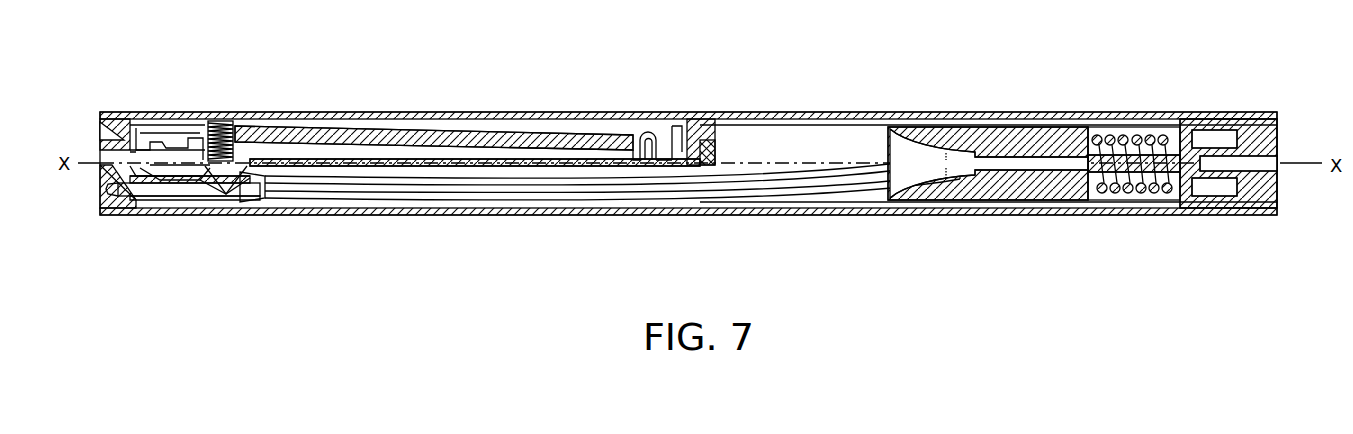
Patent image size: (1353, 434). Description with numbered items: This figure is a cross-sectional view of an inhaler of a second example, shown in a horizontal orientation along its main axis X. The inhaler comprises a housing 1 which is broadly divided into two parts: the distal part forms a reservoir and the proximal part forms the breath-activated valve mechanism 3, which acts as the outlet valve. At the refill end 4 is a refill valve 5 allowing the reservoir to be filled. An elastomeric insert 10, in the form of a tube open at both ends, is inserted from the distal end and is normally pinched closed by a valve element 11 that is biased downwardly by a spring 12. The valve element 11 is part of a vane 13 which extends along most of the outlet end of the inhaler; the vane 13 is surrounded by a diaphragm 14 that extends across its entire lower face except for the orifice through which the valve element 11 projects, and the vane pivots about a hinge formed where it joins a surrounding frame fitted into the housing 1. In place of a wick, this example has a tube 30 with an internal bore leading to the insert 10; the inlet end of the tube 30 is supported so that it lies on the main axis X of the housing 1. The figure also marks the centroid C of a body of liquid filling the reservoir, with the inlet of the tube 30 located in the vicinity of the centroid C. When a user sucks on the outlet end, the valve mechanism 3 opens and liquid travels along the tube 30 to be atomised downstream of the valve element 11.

The housing 1 is at (724, 100).
The breath-activated valve mechanism 3 is at (219, 72).
The refill end 4 is at (1283, 99).
The refill valve 5 is at (1190, 186).
The elastomeric insert 10 is at (178, 192).
The valve element 11 is at (223, 197).
The spring 12 is at (224, 118).
The vane 13 is at (427, 135).
The diaphragm 14 is at (650, 130).
The tube 30 is at (757, 198).
The centroid C is at (948, 160).